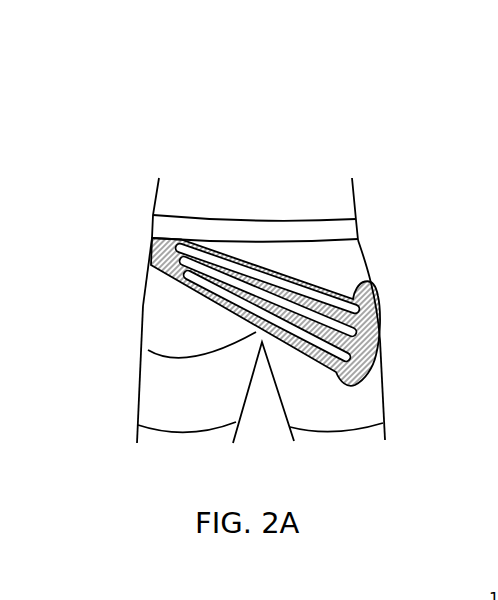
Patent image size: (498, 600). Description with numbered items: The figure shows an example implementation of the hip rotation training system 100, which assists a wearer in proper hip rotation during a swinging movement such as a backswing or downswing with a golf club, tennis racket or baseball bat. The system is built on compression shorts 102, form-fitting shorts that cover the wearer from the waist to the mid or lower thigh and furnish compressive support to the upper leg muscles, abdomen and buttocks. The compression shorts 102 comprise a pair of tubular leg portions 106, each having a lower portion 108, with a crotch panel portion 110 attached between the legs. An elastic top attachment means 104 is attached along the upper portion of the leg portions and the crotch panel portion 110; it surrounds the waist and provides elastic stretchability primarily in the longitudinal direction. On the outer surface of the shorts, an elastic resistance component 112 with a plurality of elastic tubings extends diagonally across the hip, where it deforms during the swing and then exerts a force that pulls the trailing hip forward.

The hip rotation training system 100 is at (250, 167).
The compression shorts 102 is at (353, 258).
The elastic top attachment means 104 is at (341, 224).
The tubular leg portion 106 is at (156, 409).
The lower portion 108 is at (366, 402).
The crotch panel portion 110 is at (148, 350).
The elastic resistance component 112 is at (377, 298).